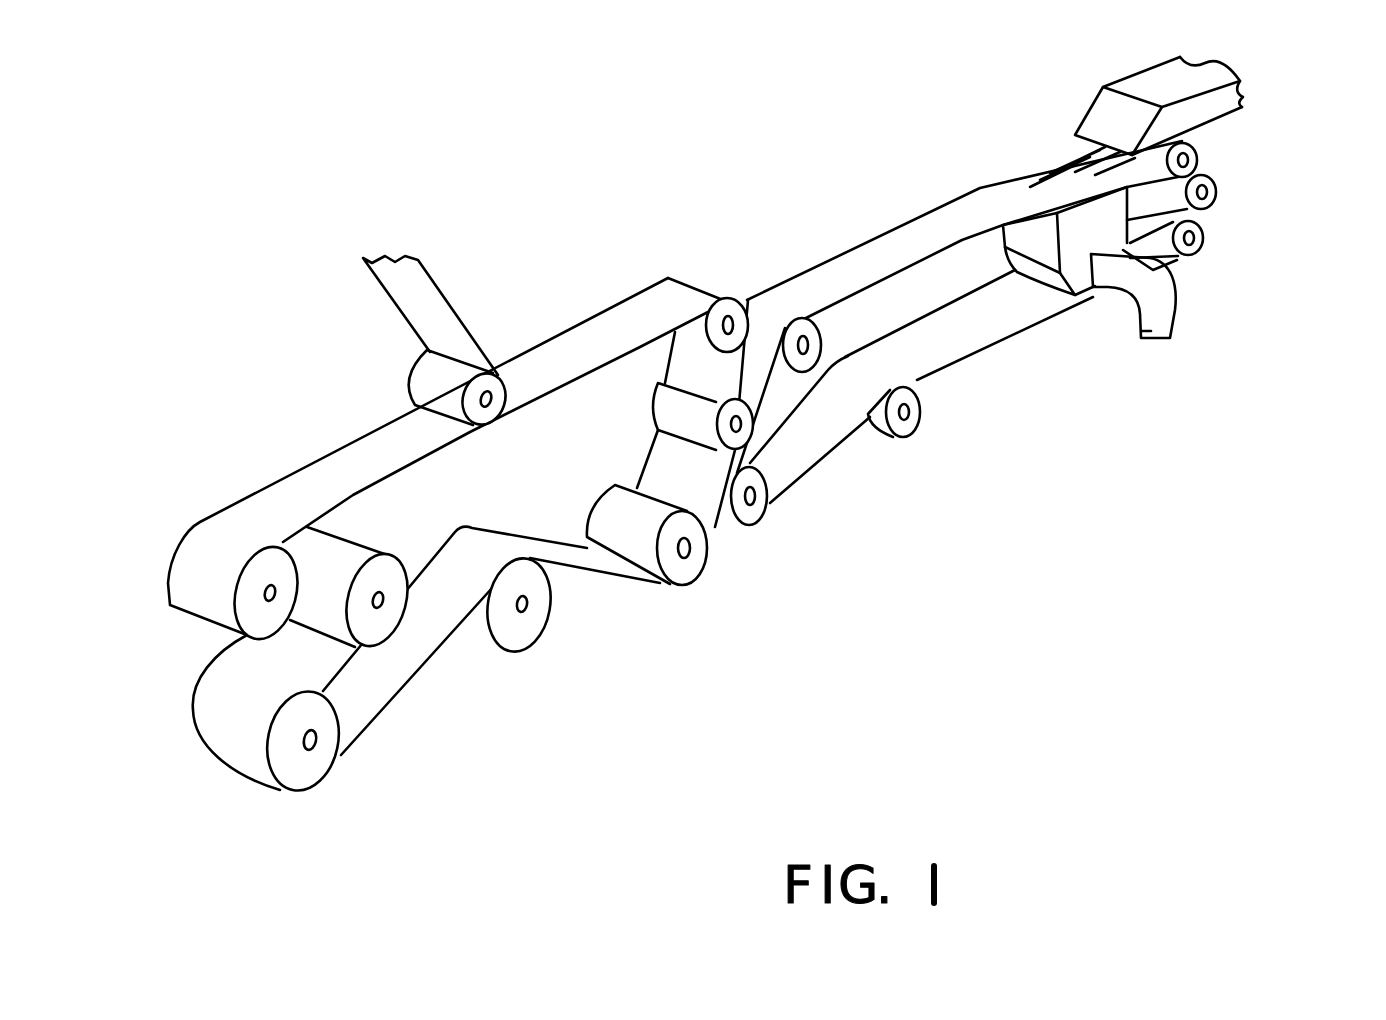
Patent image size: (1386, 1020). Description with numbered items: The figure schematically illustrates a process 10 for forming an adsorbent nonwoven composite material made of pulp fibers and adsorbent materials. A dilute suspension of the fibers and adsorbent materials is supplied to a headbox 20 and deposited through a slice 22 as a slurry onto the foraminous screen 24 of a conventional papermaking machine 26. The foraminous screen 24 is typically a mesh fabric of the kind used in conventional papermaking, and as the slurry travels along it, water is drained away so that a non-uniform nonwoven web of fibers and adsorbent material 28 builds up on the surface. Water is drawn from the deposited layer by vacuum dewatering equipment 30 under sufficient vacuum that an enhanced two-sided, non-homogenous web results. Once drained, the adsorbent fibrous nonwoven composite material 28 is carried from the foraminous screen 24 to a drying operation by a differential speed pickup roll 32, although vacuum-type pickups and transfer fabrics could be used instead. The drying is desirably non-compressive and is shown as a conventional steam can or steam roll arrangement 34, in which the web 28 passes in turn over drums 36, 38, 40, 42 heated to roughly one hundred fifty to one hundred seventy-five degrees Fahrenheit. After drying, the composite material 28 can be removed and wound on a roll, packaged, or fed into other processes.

The process for forming an adsorbent nonwoven composite material 10 is at (748, 469).
The headbox 20 is at (1200, 82).
The slice 22 is at (1063, 158).
The foraminous screen 24 is at (1237, 167).
The papermaking machine 26 is at (1258, 350).
The nonwoven web of fibers and adsorbent material 28 is at (443, 287).
The vacuum dewatering equipment 30 is at (1137, 314).
The differential speed pickup roll 32 is at (750, 543).
The steam can or steam roll arrangement 34 is at (460, 785).
The drum 36 is at (518, 640).
The drum 38 is at (306, 765).
The drum 40 is at (393, 572).
The drum 42 is at (245, 626).